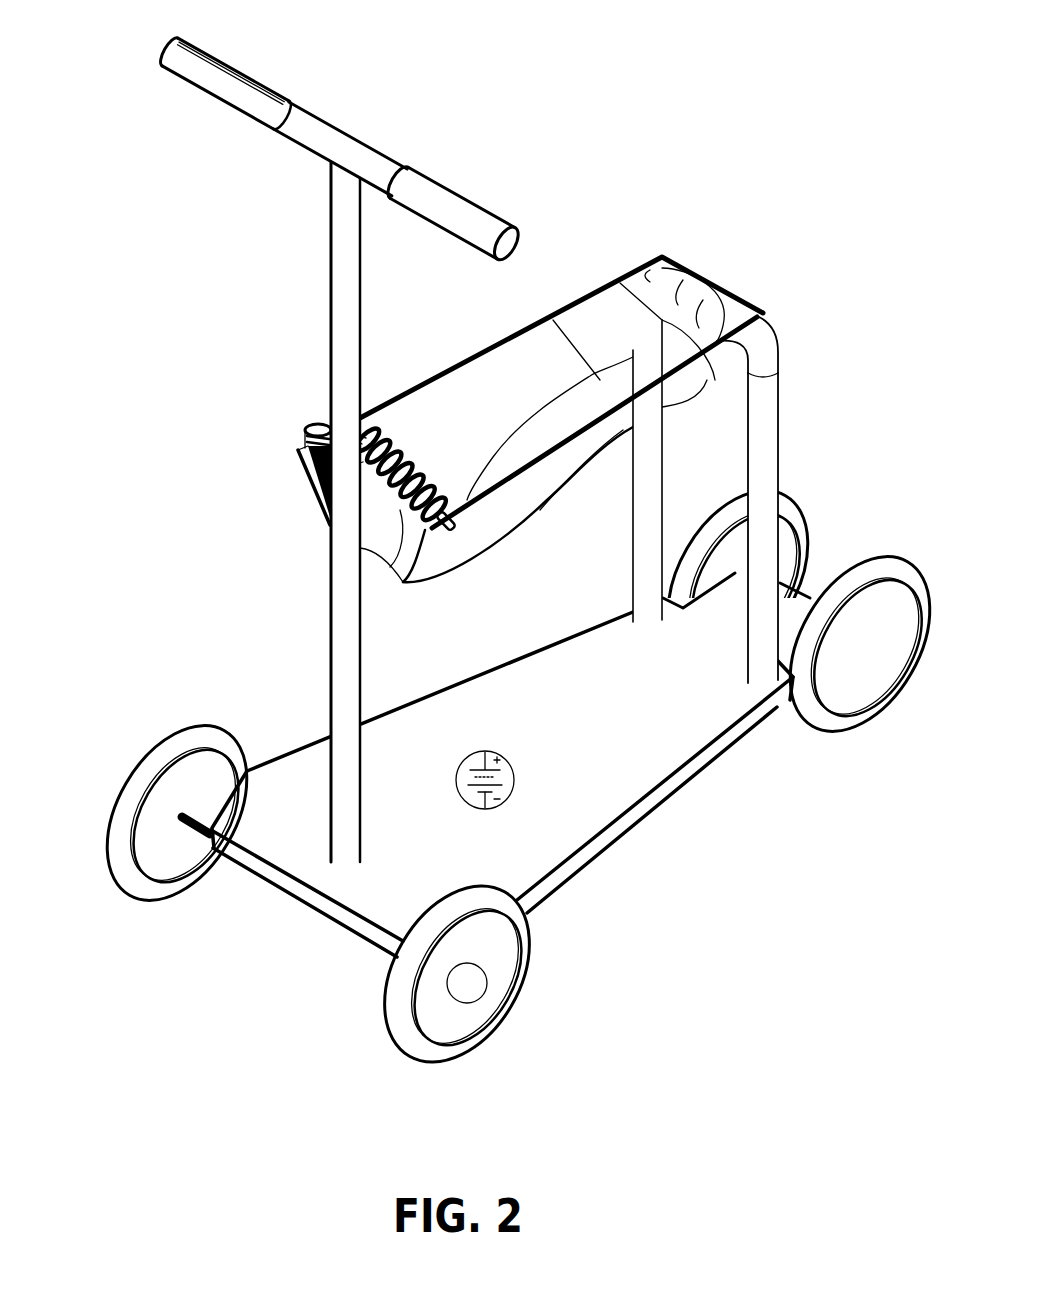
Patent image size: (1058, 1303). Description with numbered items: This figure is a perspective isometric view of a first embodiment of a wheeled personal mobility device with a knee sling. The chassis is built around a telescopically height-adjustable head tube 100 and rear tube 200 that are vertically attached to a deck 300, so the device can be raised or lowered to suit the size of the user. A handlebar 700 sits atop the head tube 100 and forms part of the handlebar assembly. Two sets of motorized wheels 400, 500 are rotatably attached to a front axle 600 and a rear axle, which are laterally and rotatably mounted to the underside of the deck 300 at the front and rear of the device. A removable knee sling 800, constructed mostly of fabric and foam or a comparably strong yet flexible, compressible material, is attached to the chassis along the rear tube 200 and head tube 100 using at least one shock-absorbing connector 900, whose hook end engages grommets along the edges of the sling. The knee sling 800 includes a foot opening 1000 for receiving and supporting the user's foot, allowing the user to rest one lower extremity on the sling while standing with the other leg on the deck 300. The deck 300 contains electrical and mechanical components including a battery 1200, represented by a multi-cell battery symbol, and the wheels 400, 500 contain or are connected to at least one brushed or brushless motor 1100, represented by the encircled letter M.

The head tube 100 is at (330, 345).
The rear tube 200 is at (778, 410).
The deck 300 is at (608, 778).
The motorized wheels 400 is at (420, 1053).
The motorized wheels 500 is at (820, 730).
The front axle 600 is at (200, 835).
The handlebar 700 is at (288, 137).
The knee sling 800 is at (623, 283).
The shock-absorbing connector 900 is at (398, 520).
The foot opening 1000 is at (682, 332).
The motor 1100 is at (488, 970).
The battery 1200 is at (467, 807).